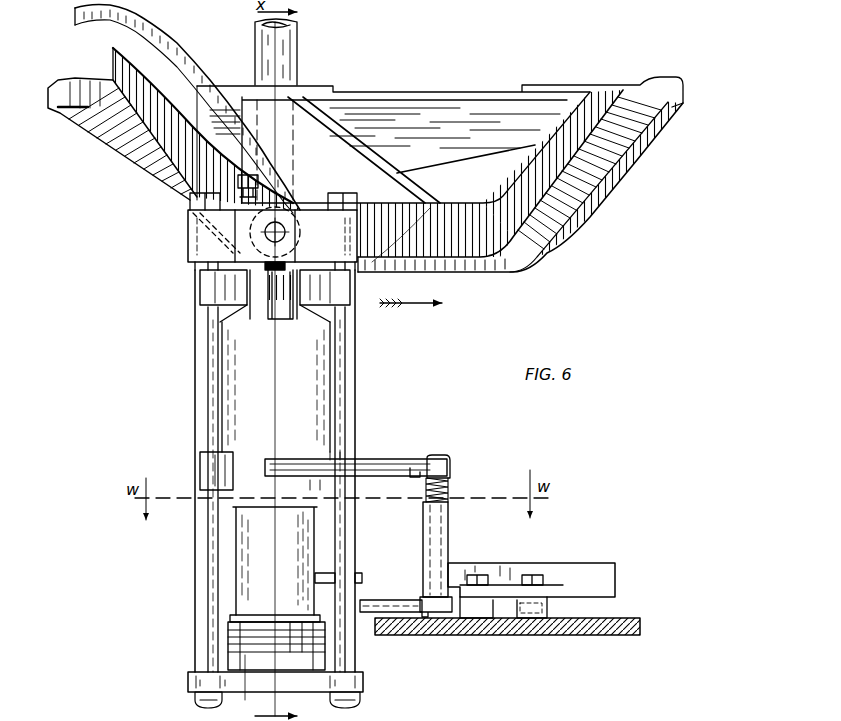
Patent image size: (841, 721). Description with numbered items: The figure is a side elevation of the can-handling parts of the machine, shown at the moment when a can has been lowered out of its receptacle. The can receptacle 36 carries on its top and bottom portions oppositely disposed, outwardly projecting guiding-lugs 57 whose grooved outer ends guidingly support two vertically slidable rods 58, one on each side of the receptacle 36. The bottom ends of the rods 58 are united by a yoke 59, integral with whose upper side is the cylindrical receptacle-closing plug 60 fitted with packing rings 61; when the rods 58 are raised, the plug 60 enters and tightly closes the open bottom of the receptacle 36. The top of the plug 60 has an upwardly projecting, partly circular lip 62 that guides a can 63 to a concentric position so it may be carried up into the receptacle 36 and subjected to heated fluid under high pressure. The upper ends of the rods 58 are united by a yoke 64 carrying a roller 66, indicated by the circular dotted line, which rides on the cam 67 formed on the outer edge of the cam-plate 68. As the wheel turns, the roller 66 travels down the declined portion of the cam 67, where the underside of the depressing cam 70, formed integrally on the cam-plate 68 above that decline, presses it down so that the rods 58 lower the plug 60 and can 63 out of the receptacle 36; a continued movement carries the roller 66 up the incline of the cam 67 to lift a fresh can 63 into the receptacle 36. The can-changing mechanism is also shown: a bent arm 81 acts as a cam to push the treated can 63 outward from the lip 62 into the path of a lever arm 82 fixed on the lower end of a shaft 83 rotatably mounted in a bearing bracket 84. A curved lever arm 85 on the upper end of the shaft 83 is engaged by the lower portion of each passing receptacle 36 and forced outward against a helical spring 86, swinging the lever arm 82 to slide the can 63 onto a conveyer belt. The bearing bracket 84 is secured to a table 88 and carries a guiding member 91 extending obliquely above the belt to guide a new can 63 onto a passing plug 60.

The can receptacle 36 is at (276, 387).
The guiding-lugs 57 is at (208, 295).
The vertically slidable rods 58 is at (203, 375).
The yoke 59 is at (300, 686).
The receptacle-closing plug 60 is at (267, 667).
The packing rings 61 is at (237, 647).
The lip 62 is at (232, 618).
The can 63 is at (275, 561).
The yoke 64 is at (272, 222).
The roller 66 is at (290, 220).
The cam 67 is at (150, 160).
The cam-plate 68 is at (448, 95).
The depressing cam 70 is at (105, 25).
The arm 81 is at (318, 572).
The lever arm 82 is at (387, 604).
The shaft 83 is at (440, 458).
The bearing bracket 84 is at (450, 535).
The curved lever arm 85 is at (385, 462).
The helical spring 86 is at (450, 490).
The table 88 is at (573, 630).
The guiding member 91 is at (583, 563).